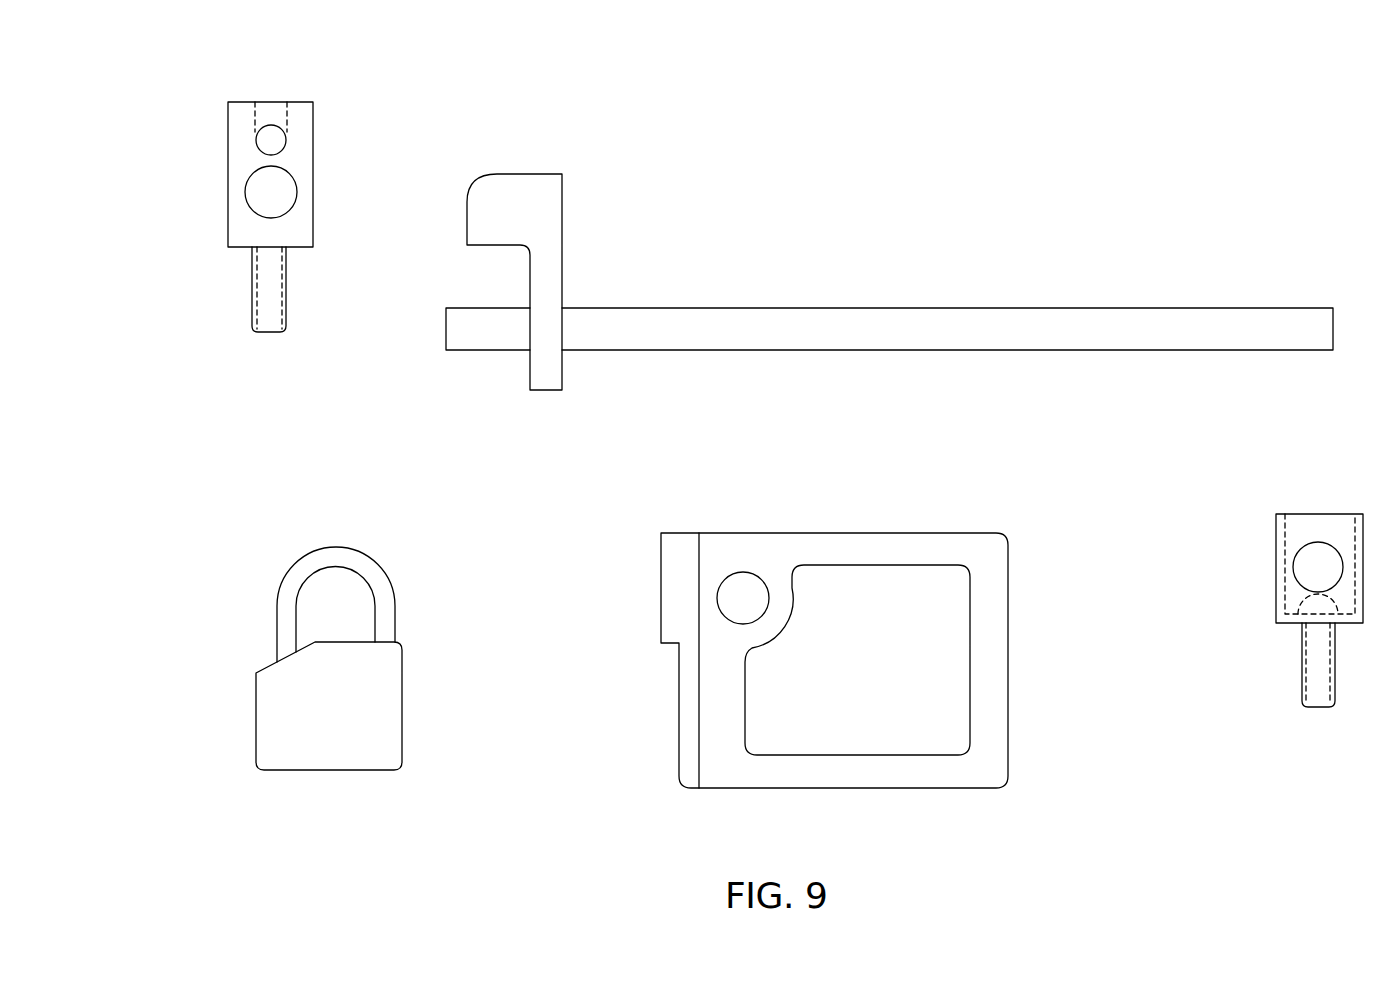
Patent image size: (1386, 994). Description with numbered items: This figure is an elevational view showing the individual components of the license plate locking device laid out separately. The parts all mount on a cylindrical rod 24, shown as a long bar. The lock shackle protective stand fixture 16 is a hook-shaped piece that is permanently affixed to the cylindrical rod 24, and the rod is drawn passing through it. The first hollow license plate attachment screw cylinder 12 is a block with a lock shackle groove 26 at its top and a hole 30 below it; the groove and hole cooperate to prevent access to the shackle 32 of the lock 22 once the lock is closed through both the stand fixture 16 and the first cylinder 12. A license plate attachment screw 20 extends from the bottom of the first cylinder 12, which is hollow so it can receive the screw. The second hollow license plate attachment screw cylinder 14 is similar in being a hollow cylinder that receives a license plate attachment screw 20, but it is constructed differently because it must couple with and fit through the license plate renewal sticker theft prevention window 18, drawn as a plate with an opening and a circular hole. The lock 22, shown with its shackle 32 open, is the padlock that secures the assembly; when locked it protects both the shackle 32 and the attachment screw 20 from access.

The first hollow license plate attachment screw cylinder 12 is at (313, 160).
The second hollow license plate attachment screw cylinder 14 is at (1315, 513).
The lock shackle protective stand fixture 16 is at (562, 202).
The license plate renewal sticker theft prevention window 18 is at (760, 533).
The license plate attachment screw 20 is at (286, 295).
The lock 22 is at (403, 682).
The cylindrical rod 24 is at (842, 307).
The lock shackle groove 26 is at (277, 102).
The hole 30 is at (257, 140).
The shackle 32 is at (383, 572).